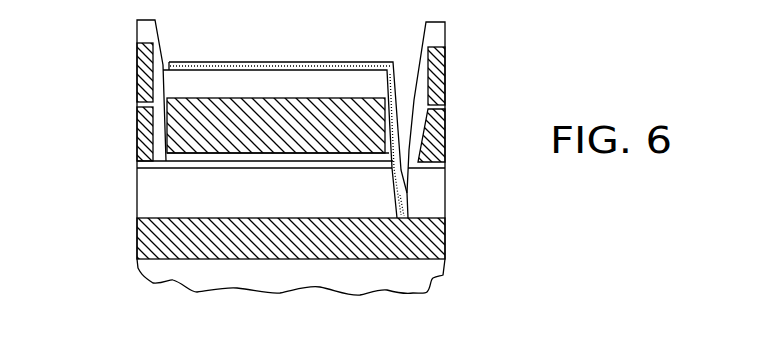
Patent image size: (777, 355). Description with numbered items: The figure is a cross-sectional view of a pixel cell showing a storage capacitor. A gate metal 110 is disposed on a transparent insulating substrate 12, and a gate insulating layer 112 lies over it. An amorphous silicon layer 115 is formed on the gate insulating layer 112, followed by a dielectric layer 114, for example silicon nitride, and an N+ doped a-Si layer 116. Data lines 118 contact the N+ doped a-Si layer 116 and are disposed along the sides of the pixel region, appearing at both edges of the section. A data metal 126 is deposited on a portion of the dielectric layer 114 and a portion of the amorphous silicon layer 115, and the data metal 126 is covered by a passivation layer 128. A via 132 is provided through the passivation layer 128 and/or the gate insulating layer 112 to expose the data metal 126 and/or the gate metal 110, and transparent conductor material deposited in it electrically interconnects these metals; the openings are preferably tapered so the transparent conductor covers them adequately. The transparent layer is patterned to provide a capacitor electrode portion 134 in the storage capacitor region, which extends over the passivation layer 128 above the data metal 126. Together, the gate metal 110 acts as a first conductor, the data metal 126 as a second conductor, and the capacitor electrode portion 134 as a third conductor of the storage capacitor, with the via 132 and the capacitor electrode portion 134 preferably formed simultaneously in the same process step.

The transparent insulating substrate 12 is at (438, 278).
The gate metal 110 is at (137, 240).
The gate insulating layer 112 is at (137, 195).
The dielectric layer 114 is at (137, 132).
The amorphous silicon layer 115 is at (137, 163).
The N+ doped a-Si layer 116 is at (445, 110).
The data lines 118 is at (137, 67).
The data metal 126 is at (176, 98).
The passivation layer 128 is at (363, 70).
The via 132 is at (408, 194).
The capacitor electrode portion 134 is at (262, 62).